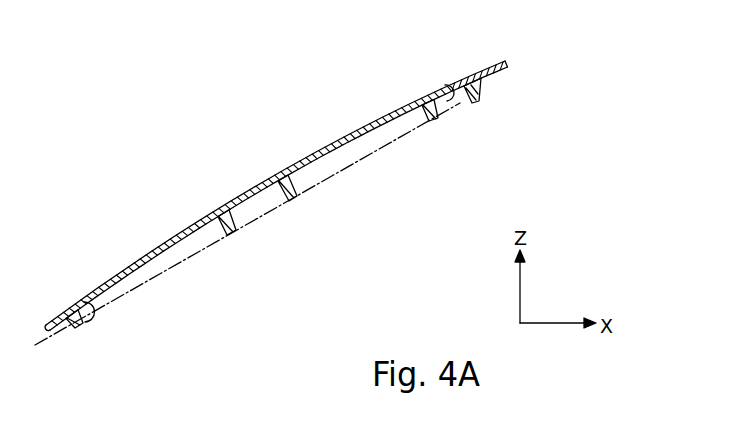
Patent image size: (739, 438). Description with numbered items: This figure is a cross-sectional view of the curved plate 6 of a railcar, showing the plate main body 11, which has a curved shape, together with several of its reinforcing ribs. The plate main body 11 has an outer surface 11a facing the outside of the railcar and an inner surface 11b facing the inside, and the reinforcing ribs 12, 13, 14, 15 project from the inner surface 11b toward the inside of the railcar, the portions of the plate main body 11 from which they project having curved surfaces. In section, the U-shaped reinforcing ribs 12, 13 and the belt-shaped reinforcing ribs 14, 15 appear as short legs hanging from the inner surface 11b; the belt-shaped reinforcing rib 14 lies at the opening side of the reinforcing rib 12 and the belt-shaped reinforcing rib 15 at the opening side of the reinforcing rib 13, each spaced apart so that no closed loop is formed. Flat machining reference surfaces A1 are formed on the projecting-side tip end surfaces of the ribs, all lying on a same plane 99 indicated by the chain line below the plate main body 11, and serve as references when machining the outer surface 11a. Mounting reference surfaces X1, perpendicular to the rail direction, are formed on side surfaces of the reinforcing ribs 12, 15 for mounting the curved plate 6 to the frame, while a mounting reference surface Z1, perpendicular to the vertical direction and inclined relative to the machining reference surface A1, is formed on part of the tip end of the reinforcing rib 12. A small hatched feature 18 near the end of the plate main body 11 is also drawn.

The curved plate 6 is at (253, 158).
The plate main body 11 is at (340, 138).
The outer surface 11a is at (165, 238).
The inner surface 11b is at (148, 262).
The reinforcing rib 12 is at (80, 326).
The reinforcing rib 13 is at (282, 192).
The belt-shaped reinforcing rib 14 is at (216, 234).
The belt-shaped reinforcing rib 15 is at (426, 120).
The flange 18 is at (436, 115).
The same plane 99 is at (368, 150).
The mounting reference surface X1 is at (95, 300).
The machining reference surface A1 is at (233, 237).
The mounting reference surface Z1 is at (73, 328).